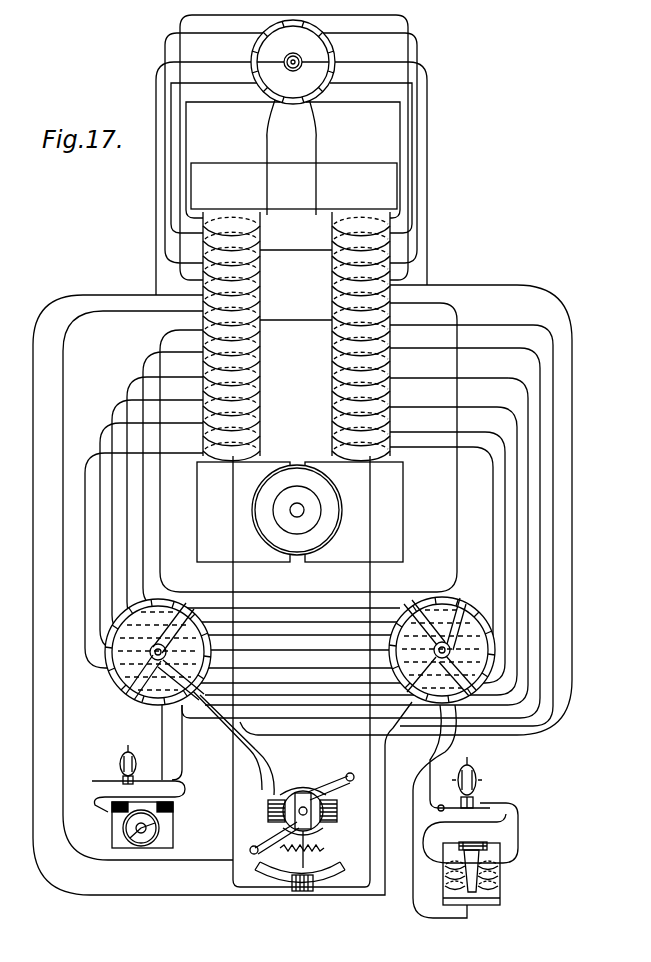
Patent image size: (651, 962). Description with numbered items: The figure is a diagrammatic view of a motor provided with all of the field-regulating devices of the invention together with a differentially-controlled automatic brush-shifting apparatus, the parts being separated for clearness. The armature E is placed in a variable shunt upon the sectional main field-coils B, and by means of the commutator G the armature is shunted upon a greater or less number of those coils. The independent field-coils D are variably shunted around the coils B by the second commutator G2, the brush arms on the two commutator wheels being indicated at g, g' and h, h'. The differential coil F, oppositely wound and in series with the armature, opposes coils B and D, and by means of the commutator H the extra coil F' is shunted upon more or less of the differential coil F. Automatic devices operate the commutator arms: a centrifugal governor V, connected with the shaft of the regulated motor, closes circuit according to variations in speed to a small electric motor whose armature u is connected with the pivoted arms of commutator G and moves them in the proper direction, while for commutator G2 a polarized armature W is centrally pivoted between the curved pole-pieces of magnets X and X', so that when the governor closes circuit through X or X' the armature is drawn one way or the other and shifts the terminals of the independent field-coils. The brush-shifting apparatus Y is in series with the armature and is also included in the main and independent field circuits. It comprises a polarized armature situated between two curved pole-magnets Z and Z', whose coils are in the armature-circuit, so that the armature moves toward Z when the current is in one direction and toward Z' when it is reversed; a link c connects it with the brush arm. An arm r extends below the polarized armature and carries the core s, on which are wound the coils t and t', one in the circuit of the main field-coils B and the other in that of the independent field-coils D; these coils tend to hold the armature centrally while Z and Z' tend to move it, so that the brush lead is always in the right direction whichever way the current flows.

The commutator H is at (293, 52).
The extra coil F' is at (296, 234).
The differential field-coil F is at (296, 271).
The independent field-coils D is at (296, 309).
The main field-coils B is at (296, 391).
The armature E is at (297, 510).
The commutator G is at (155, 655).
The commutator G2 is at (442, 640).
The brush g is at (171, 628).
The brush g' is at (165, 677).
The brush h is at (435, 624).
The brush h' is at (441, 670).
The centrifugal governor V is at (300, 776).
The motor armature u is at (162, 826).
The polarized armature Y is at (299, 826).
The arm c is at (331, 780).
The curved pole-magnet Z is at (262, 811).
The curved pole-magnet Z' is at (337, 813).
The arm r is at (287, 840).
The field-circuit coil t is at (297, 873).
The field-circuit coil t' is at (307, 871).
The core s is at (315, 883).
The polarized armature W is at (470, 833).
The magnet X is at (463, 874).
The magnet X' is at (501, 875).